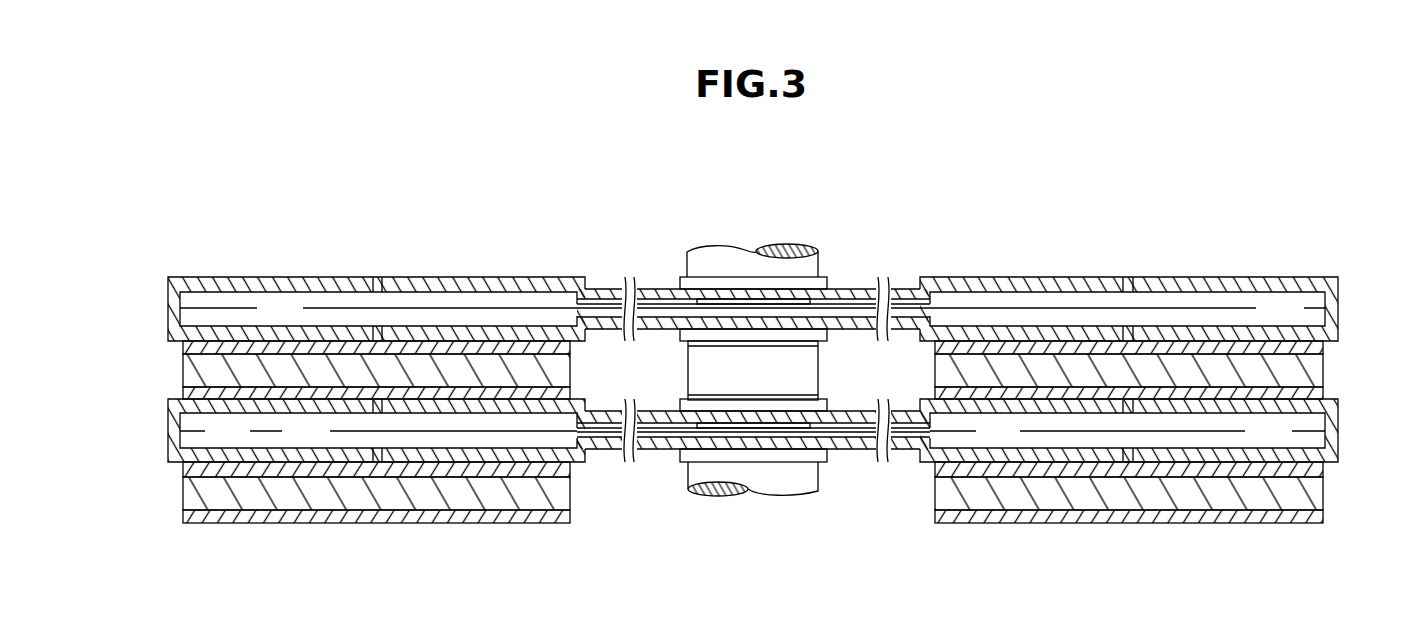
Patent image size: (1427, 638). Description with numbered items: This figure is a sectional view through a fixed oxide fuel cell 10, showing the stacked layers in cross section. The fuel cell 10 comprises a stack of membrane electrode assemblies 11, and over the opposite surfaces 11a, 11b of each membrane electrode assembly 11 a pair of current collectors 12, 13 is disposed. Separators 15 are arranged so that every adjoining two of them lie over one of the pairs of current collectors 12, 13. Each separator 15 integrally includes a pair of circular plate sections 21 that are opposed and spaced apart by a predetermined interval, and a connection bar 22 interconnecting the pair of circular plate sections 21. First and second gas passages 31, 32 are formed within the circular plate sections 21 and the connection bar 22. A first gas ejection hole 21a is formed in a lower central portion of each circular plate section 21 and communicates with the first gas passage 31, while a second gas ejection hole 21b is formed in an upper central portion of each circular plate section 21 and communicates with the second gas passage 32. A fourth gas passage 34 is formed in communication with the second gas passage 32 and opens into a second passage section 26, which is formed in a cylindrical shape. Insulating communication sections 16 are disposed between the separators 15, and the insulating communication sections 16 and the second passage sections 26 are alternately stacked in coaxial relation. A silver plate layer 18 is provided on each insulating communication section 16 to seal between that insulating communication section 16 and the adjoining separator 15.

The fixed oxide fuel cell 10 is at (981, 166).
The membrane electrode assembly 11 is at (183, 371).
The surface of the MEA 11a is at (752, 369).
The surface of the MEA 11b is at (997, 448).
The current collector 12 is at (183, 347).
The current collector 13 is at (183, 393).
The separator 15 is at (1262, 277).
The insulating communication section 16 is at (818, 268).
The silver plate layer 18 is at (768, 305).
The circular plate section 21 is at (478, 277).
The first gas ejection hole 21a is at (372, 328).
The second gas ejection hole 21b is at (382, 300).
The connection bar 22 is at (652, 289).
The second passage section 26 is at (832, 283).
The first gas passage 31 is at (987, 323).
The second gas passage 32 is at (990, 293).
The fourth gas passage 34 is at (782, 255).